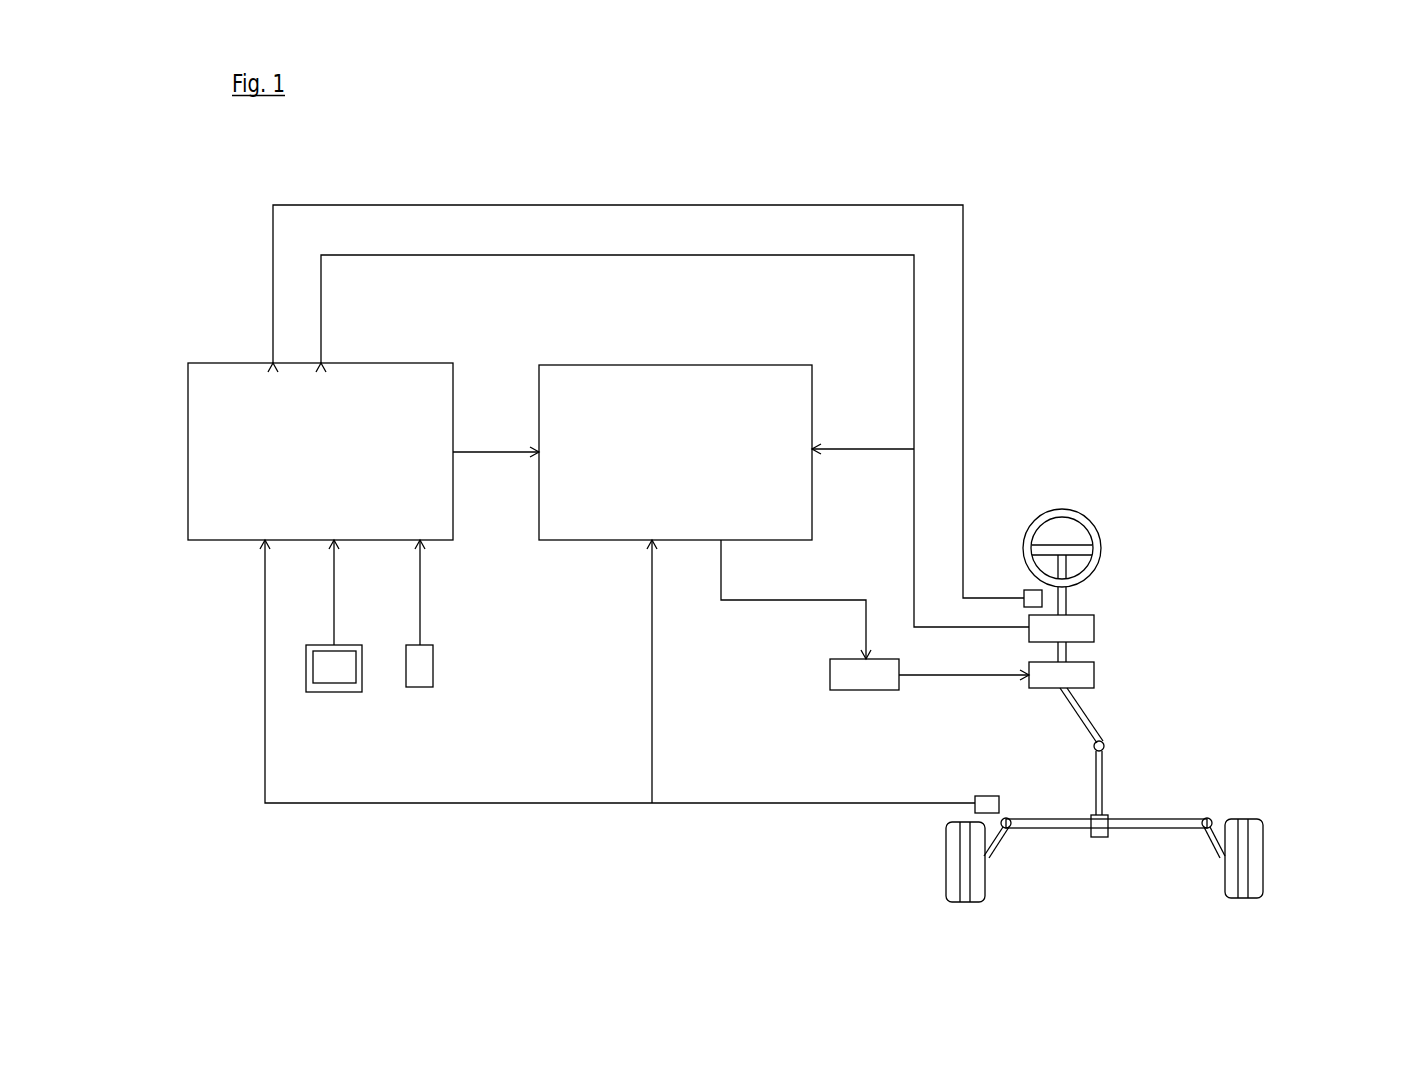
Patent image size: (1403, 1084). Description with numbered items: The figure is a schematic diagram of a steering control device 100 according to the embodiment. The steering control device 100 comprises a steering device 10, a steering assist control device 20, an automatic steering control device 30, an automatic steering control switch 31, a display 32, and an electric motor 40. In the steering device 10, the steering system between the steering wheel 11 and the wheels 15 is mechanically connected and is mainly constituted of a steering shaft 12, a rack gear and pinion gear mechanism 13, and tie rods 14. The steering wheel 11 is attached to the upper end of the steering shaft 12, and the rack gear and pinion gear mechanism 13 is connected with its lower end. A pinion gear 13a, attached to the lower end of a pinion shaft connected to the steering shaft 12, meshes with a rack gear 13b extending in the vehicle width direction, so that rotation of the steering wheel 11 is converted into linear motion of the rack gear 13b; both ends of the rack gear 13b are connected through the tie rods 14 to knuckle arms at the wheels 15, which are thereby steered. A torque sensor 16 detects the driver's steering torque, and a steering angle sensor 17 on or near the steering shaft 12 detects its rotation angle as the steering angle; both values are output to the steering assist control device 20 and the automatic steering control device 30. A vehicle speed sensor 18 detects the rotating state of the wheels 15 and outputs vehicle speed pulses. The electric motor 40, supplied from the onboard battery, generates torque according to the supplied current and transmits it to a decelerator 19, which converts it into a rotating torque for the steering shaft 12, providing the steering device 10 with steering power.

The steering control device 100 is at (1145, 368).
The steering device 10 is at (1140, 729).
The steering wheel 11 is at (1099, 526).
The steering shaft 12 is at (1067, 602).
The rack gear and pinion gear mechanism 13 is at (1075, 838).
The pinion gear 13a is at (1100, 838).
The rack gear 13b is at (1170, 818).
The tie rods 14 is at (998, 848).
The wheels 15 is at (1263, 830).
The torque sensor 16 is at (1095, 621).
The steering angle sensor 17 is at (1024, 592).
The vehicle speed sensor 18 is at (999, 800).
The decelerator 19 is at (1095, 670).
The steering assist control device 20 is at (714, 365).
The automatic steering control device 30 is at (412, 363).
The automatic steering control switch 31 is at (433, 664).
The display 32 is at (340, 693).
The electric motor 40 is at (830, 677).